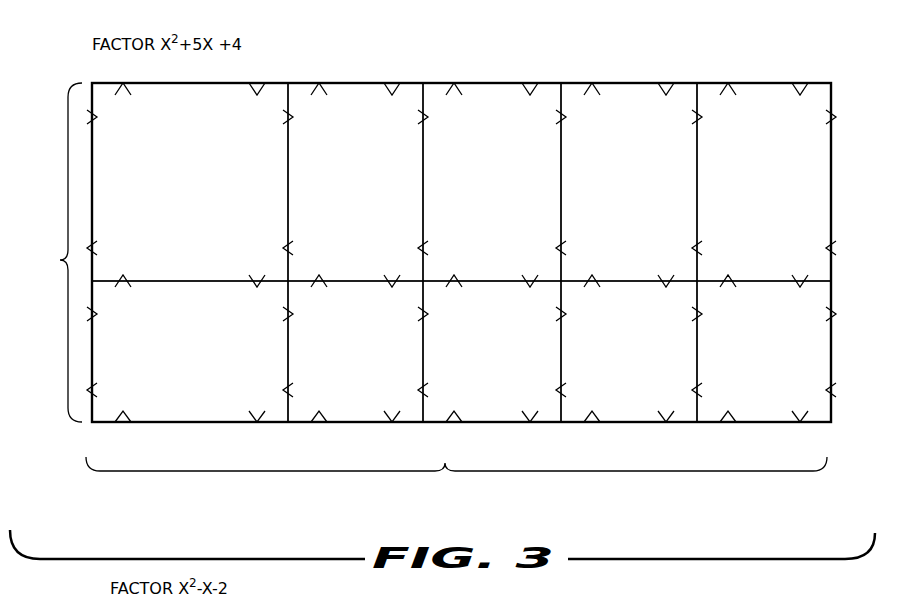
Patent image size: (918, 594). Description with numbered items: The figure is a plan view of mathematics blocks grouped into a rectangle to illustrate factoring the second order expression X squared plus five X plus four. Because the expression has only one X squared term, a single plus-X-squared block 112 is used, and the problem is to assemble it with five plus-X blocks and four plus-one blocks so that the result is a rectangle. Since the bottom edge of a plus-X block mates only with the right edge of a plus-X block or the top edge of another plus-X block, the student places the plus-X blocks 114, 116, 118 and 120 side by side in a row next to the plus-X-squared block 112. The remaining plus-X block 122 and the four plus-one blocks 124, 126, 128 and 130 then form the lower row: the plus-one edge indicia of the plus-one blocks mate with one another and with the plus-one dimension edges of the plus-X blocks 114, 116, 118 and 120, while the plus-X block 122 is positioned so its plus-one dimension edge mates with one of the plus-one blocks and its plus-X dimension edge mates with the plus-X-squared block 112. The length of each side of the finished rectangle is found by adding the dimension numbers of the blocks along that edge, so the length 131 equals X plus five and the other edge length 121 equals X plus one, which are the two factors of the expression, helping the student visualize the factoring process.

The +X² block 112 is at (190, 83).
The +X block 114 is at (378, 66).
The +X block 116 is at (511, 66).
The +X block 118 is at (648, 66).
The +X block 120 is at (778, 66).
The +X block 122 is at (168, 423).
The +1 block 124 is at (362, 423).
The +1 block 126 is at (493, 423).
The +1 block 128 is at (618, 423).
The +1 block 130 is at (735, 423).
The length of the other edge of the rectangle 121 is at (52, 252).
The length of the rectangle 131 is at (456, 479).